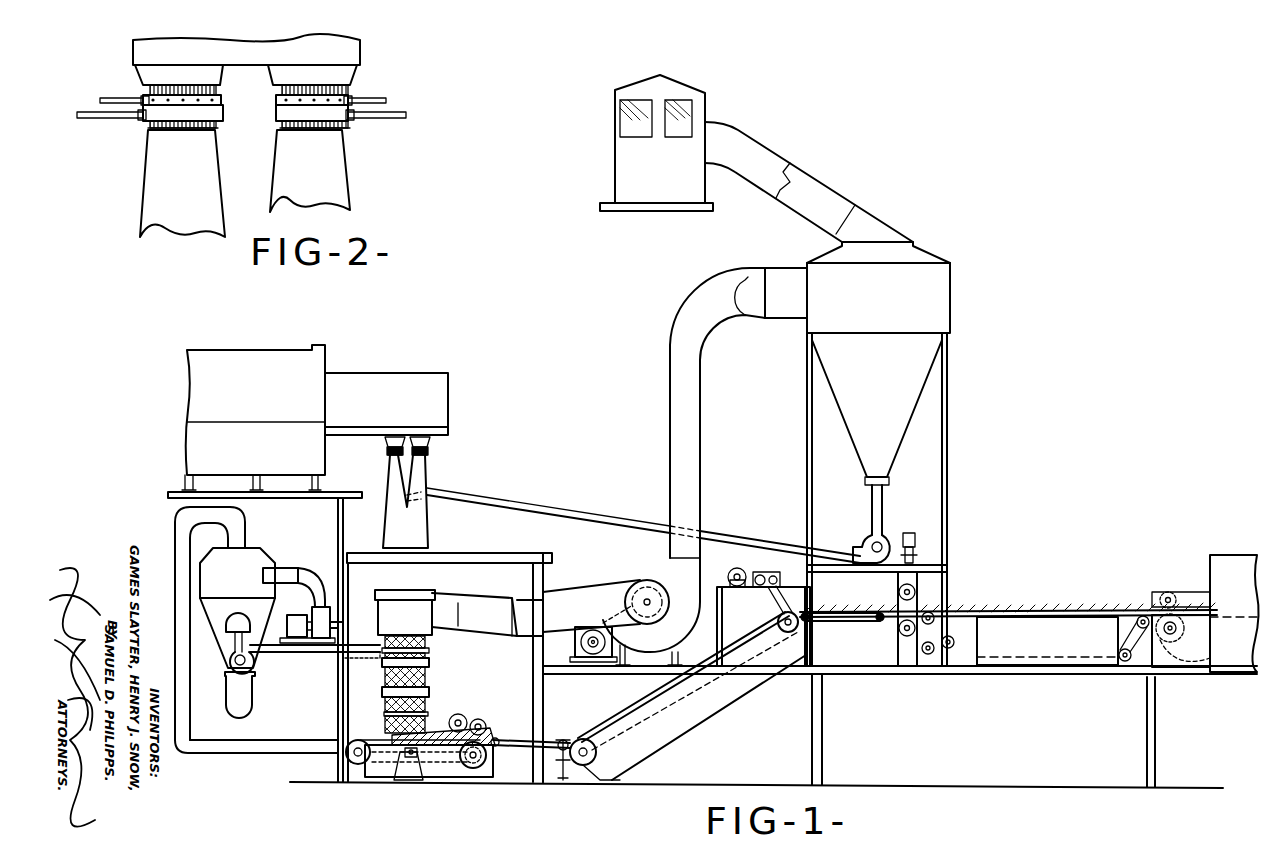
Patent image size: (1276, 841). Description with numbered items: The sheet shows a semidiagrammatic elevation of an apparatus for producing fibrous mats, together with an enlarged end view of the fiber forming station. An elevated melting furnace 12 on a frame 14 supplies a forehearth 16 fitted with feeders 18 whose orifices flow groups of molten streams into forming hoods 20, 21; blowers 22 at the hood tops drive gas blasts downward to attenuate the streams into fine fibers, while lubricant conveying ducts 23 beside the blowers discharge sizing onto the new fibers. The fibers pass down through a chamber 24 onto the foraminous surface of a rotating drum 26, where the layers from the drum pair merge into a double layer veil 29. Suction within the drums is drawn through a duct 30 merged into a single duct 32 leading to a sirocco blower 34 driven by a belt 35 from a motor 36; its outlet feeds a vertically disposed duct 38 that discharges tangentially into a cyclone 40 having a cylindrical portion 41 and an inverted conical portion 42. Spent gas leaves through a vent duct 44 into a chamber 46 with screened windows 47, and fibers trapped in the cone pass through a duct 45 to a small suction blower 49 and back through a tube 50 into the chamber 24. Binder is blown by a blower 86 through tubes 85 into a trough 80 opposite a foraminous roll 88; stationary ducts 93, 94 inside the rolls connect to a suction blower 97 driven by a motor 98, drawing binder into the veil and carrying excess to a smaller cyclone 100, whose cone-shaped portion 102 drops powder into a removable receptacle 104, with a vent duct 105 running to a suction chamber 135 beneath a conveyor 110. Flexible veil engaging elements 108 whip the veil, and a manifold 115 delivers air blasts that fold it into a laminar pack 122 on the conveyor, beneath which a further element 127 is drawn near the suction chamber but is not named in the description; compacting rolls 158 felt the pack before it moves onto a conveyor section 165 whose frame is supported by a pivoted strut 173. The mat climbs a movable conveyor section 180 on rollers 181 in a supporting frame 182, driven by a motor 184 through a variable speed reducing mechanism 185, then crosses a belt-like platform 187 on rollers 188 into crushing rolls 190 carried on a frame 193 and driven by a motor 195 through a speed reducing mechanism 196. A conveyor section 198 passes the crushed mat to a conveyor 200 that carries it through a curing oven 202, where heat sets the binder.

In FIG. 1, the melting furnace 12 is at (254, 388).
In FIG. 1, the frame 14 is at (268, 505).
In FIG. 2, the forehearth 16 is at (345, 50).
In FIG. 1, the forehearth 16 is at (392, 405).
In FIG. 2, the feeders 18 is at (150, 75).
In FIG. 1, the feeders 18 is at (382, 440).
In FIG. 2, the forming hood 20 is at (155, 203).
In FIG. 1, the forming hood 20 is at (392, 484).
In FIG. 2, the forming hood 21 is at (338, 177).
In FIG. 2, the blowers 22 is at (160, 115).
In FIG. 1, the blowers 22 is at (387, 455).
In FIG. 2, the lubricant conveying ducts 23 is at (140, 98).
In FIG. 1, the lubricant conveying ducts 23 is at (428, 452).
In FIG. 1, the chamber 24 is at (424, 576).
In FIG. 1, the cylindrically-shaped drum 26 is at (416, 627).
In FIG. 1, the double layer veil or fibrous strip 29 is at (426, 640).
In FIG. 1, the duct 30 is at (440, 612).
In FIG. 1, the single duct 32 is at (576, 585).
In FIG. 1, the blower 34 is at (640, 580).
In FIG. 1, the belt 35 is at (604, 618).
In FIG. 1, the motor 36 is at (576, 648).
In FIG. 1, the vertically disposed duct 38 is at (698, 468).
In FIG. 1, the cyclone 40 is at (906, 303).
In FIG. 1, the cylindrical portion 41 is at (938, 328).
In FIG. 1, the inverted conically-shaped portion 42 is at (896, 437).
In FIG. 1, the vent duct 44 is at (822, 193).
In FIG. 1, the duct 45 is at (884, 500).
In FIG. 1, the chamber 46 is at (712, 100).
In FIG. 1, the screened windows 47 is at (668, 133).
In FIG. 1, the small suction device or blower 49 is at (868, 545).
In FIG. 1, the tube 50 is at (515, 502).
In FIG. 1, the trough 80 is at (428, 652).
In FIG. 1, the tubes 85 is at (325, 660).
In FIG. 1, the blower 86 is at (252, 668).
In FIG. 1, the cylindrical roll 88 is at (428, 664).
In FIG. 1, the stationary duct 93 is at (370, 664).
In FIG. 1, the stationary duct 94 is at (350, 645).
In FIG. 1, the suction device or blower 97 is at (326, 612).
In FIG. 1, the motor 98 is at (303, 622).
In FIG. 1, the cyclone 100 is at (236, 587).
In FIG. 1, the cone-shaped portion 102 is at (224, 645).
In FIG. 1, the bag or receptacle 104 is at (250, 704).
In FIG. 1, the vent duct 105 is at (292, 750).
In FIG. 1, the veil engaging elements 108 is at (428, 690).
In FIG. 1, the conveyor 110 is at (378, 740).
In FIG. 1, the manifold or pipe 115 is at (384, 712).
In FIG. 1, the laminar pack 122 is at (437, 737).
In FIG. 1, the drive 127 is at (440, 790).
In FIG. 1, the suction chamber 135 is at (460, 797).
In FIG. 1, the compacting or felting rolls 158 is at (480, 717).
In FIG. 1, the conveyor section 165 is at (528, 752).
In FIG. 1, the strut or link 173 is at (578, 778).
In FIG. 1, the movable conveyor section 180 is at (624, 714).
In FIG. 1, the rollers 181 is at (576, 738).
In FIG. 1, the supporting frame 182 is at (685, 732).
In FIG. 1, the motor 184 is at (738, 570).
In FIG. 1, the variable speed reducing mechanism 185 is at (785, 572).
In FIG. 1, the belt-like platform 187 is at (875, 622).
In FIG. 1, the rollers 188 is at (806, 622).
In FIG. 1, the crushing rolls 190 is at (922, 598).
In FIG. 1, the frame 193 is at (898, 605).
In FIG. 1, the motor 195 is at (915, 538).
In FIG. 1, the speed reducing mechanism 196 is at (915, 558).
In FIG. 1, the conveyor section 198 is at (978, 622).
In FIG. 1, the conveyor 200 is at (1180, 620).
In FIG. 1, the curing zone or oven 202 is at (1225, 575).